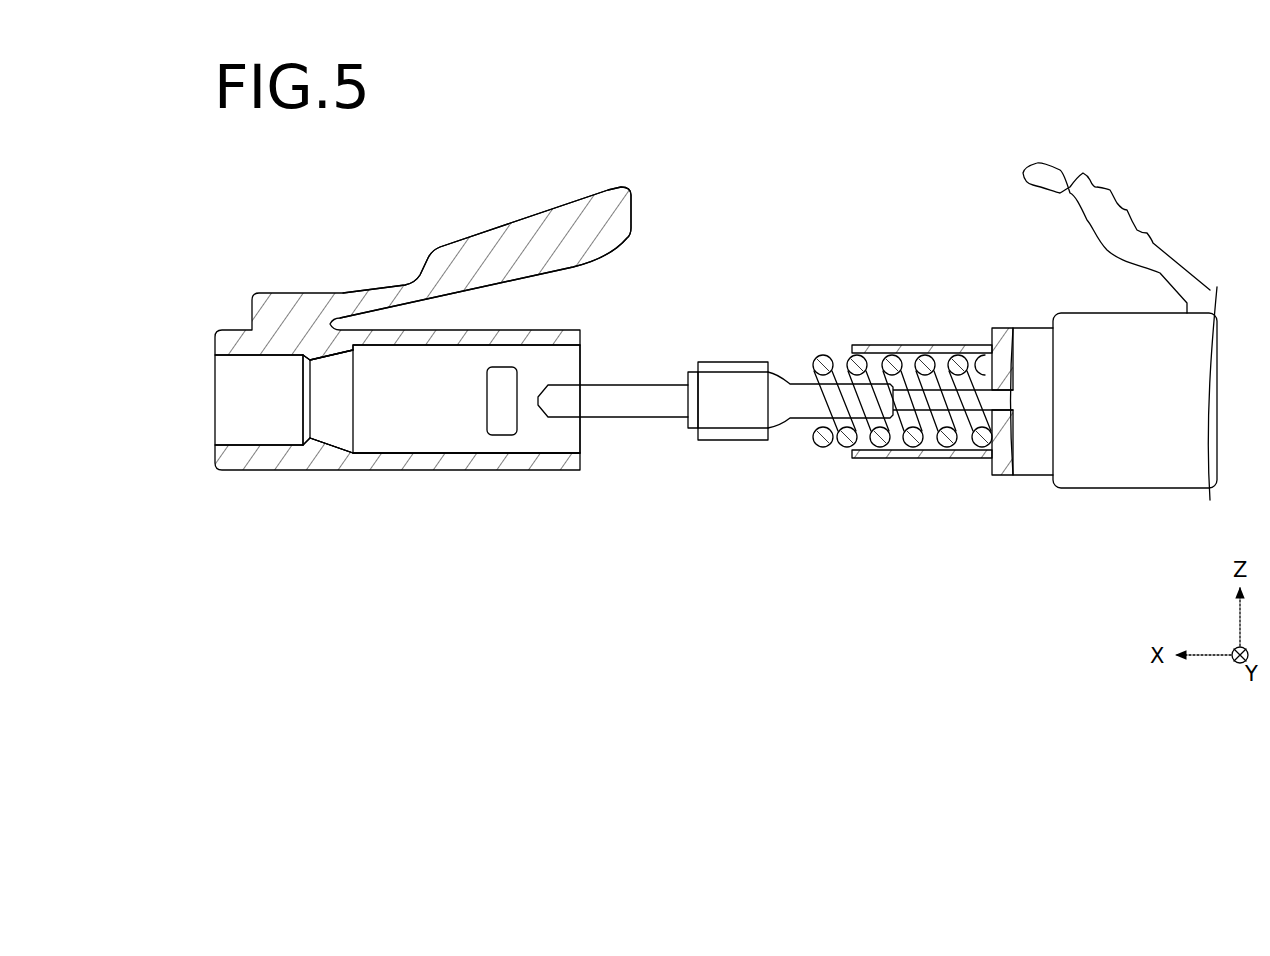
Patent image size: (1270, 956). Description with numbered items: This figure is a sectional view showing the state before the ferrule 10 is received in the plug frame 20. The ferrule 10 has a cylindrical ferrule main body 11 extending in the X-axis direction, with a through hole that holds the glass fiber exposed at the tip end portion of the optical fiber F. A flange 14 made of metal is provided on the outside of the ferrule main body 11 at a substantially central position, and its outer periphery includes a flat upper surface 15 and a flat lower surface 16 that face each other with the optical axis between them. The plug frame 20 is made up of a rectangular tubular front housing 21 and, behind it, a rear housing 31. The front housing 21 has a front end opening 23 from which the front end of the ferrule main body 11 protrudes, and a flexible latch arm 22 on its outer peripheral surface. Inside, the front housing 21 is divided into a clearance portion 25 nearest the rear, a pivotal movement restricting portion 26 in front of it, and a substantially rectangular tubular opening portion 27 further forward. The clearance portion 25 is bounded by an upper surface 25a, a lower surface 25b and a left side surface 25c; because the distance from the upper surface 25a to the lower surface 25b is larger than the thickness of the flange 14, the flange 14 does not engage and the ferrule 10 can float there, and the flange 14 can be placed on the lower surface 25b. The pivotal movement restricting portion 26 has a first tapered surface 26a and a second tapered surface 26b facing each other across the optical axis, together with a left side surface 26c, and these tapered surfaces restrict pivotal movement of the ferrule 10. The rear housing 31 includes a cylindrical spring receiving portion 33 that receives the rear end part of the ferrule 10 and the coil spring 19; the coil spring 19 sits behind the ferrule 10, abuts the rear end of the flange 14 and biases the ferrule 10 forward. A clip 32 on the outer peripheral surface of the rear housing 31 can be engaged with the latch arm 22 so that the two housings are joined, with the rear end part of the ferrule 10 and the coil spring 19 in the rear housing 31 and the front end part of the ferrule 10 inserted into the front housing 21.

The ferrule 10 is at (673, 456).
The ferrule main body 11 is at (636, 398).
The flange 14 is at (749, 446).
The upper surface 15 is at (737, 360).
The lower surface 16 is at (711, 442).
The coil spring 19 is at (890, 355).
The plug frame 20 is at (887, 603).
The front housing 21 is at (570, 475).
The latch arm 22 is at (563, 238).
The front end opening 23 is at (214, 410).
The clearance portion 25 is at (407, 369).
The upper surface 25a is at (490, 350).
The lower surface 25b is at (476, 451).
The left side surface 25c is at (549, 440).
The pivotal movement restricting portion 26 is at (334, 374).
The first tapered surface 26a is at (349, 349).
The second tapered surface 26b is at (356, 456).
The left side surface 26c is at (345, 402).
The opening portion 27 is at (234, 387).
The rear housing 31 is at (1057, 490).
The clip 32 is at (1108, 191).
The spring receiving portion 33 is at (893, 460).
The optical fiber F is at (968, 406).